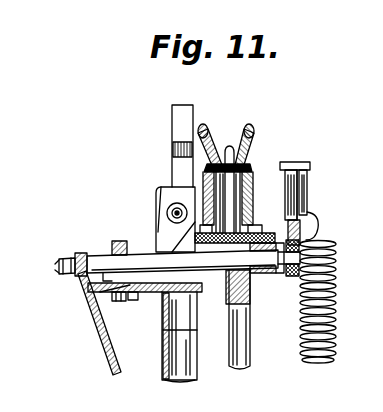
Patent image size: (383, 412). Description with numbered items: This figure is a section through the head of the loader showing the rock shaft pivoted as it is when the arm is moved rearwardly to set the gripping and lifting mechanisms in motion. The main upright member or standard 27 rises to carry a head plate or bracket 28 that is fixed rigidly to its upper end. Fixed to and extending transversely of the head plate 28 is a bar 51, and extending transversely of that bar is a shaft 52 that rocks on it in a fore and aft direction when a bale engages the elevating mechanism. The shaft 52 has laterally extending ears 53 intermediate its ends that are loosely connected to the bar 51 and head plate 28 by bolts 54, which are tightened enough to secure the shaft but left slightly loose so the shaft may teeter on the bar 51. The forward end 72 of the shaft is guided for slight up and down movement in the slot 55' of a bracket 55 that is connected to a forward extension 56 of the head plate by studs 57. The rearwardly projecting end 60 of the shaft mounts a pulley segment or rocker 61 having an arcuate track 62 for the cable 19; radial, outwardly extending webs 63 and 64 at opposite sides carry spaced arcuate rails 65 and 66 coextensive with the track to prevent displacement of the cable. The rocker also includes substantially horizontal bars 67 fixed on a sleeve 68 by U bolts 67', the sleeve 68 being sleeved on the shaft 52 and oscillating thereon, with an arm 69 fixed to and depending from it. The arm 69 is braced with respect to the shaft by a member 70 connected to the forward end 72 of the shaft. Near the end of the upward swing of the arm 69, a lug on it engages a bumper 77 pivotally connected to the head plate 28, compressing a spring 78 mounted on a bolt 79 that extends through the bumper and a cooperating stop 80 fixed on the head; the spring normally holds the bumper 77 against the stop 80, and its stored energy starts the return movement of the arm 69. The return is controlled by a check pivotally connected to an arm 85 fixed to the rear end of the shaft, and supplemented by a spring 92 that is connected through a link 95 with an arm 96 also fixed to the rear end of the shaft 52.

The bumper 77 is at (172, 112).
The stop 80 is at (164, 190).
The spring 78 is at (170, 206).
The bolt 79 is at (171, 213).
The arcuate rail 65 is at (203, 124).
The arcuate rail 66 is at (249, 124).
The cable 19 is at (228, 144).
The web 63 is at (200, 140).
The arcuate track 62 is at (252, 160).
The pulley segment or rocker 61 is at (255, 138).
The web 64 is at (281, 168).
The horizontal bars 67 is at (235, 227).
The rearwardly projecting end 60 is at (305, 240).
The link 95 is at (308, 182).
The arm 96 is at (308, 204).
The bolts 54 is at (150, 256).
The forward end 72 is at (59, 266).
The bracket 55 is at (96, 233).
The shaft 52 is at (90, 285).
The slot 55' is at (117, 309).
The member 70 is at (110, 375).
The forward extension 56 is at (112, 293).
The studs 57 is at (128, 300).
The head plate or bracket 28 is at (160, 300).
The bar 51 is at (163, 332).
The ears 53 is at (198, 300).
The main upright member or standard 27 is at (192, 378).
The arm 69 is at (252, 365).
The U bolts 67' is at (268, 294).
The sleeve 68 is at (262, 274).
The arm or crank 85 is at (292, 277).
The spring 92 is at (332, 336).